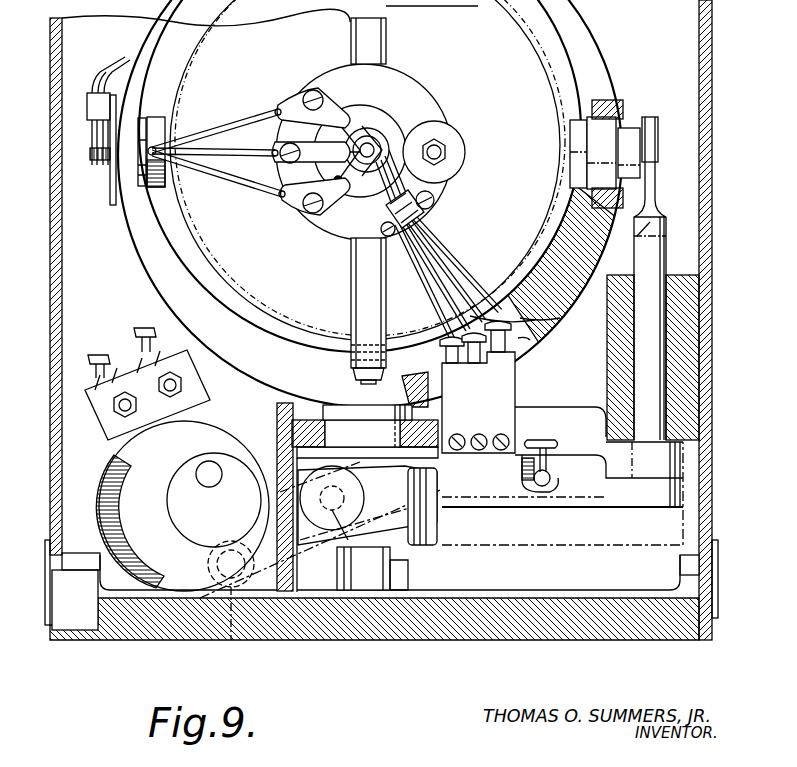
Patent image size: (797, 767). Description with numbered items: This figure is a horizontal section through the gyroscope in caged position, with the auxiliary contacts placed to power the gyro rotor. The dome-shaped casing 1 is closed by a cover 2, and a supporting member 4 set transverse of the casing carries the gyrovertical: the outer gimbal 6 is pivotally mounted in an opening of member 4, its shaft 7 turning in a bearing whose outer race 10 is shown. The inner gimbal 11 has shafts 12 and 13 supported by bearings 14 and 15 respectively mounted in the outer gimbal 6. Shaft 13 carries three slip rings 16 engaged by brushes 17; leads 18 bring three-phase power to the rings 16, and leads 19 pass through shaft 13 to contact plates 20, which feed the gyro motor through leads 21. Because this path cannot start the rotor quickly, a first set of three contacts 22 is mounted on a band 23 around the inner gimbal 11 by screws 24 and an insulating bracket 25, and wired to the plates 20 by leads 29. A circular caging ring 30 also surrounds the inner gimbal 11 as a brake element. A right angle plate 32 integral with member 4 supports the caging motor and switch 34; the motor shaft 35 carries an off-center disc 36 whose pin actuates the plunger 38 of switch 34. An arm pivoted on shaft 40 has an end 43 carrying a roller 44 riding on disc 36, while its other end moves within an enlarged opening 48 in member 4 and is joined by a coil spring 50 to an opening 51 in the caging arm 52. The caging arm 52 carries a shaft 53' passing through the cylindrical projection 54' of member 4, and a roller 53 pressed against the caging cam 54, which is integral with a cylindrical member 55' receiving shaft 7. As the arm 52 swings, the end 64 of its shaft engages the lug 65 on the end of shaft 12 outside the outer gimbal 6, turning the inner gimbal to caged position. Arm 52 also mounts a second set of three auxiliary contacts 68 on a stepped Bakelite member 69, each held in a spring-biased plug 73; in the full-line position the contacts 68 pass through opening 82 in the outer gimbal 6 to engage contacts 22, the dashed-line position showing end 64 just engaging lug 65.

The casing 1 is at (705, 145).
The cover 2 is at (428, 625).
The supporting member 4 is at (300, 420).
The outer gimbal 6 is at (600, 53).
The shaft 7 is at (350, 420).
The outer race 10 is at (720, 15).
The inner gimbal 11 is at (535, 532).
The shaft 12 is at (590, 152).
The shaft 13 is at (150, 142).
The bearing 14 is at (608, 147).
The bearing 15 is at (138, 165).
The slip rings 16 is at (90, 151).
The brushes 17 is at (92, 133).
The leads 18 is at (122, 66).
The leads 19 is at (228, 148).
The contact plates 20 is at (335, 108).
The leads 21 is at (370, 125).
The contacts 22 is at (498, 352).
The band 23 is at (542, 48).
The screws 24 is at (545, 322).
The bracket 25 is at (560, 300).
The leads 29 is at (440, 262).
The caging ring 30 is at (362, 265).
The right angle plate 32 is at (290, 575).
The switch 34 is at (120, 432).
The shaft 35 is at (212, 484).
The disc 36 is at (182, 506).
The plunger 38 is at (200, 412).
The shaft 40 is at (320, 530).
The end 43 is at (226, 622).
The roller 44 is at (250, 555).
The opening 48 is at (438, 430).
The coil spring 50 is at (550, 440).
The opening 51 is at (550, 479).
The caging arm 52 is at (640, 508).
The roller 53 is at (436, 520).
The shaft 53' is at (677, 357).
The caging cam 54 is at (363, 562).
The cylindrical projection 54' is at (563, 275).
The cylindrical member 55' is at (415, 575).
The end 64 is at (652, 182).
The lug 65 is at (655, 115).
The auxiliary contacts 68 is at (452, 363).
The stepped Bakelite member 69 is at (512, 405).
The plug 73 is at (476, 363).
The opening 82 is at (538, 351).